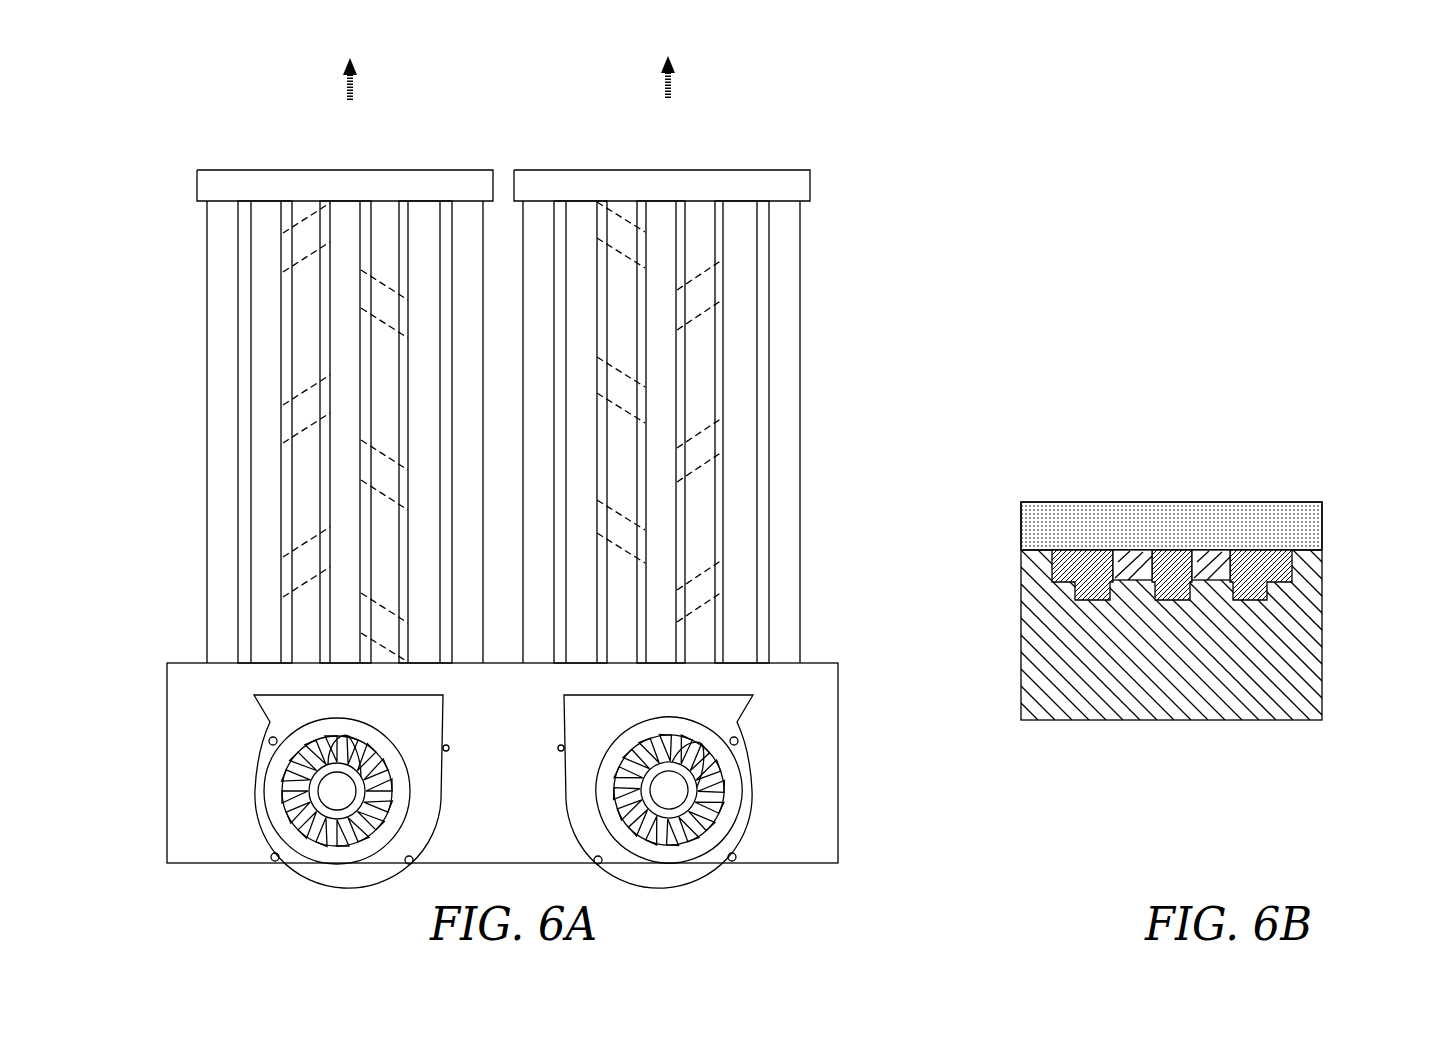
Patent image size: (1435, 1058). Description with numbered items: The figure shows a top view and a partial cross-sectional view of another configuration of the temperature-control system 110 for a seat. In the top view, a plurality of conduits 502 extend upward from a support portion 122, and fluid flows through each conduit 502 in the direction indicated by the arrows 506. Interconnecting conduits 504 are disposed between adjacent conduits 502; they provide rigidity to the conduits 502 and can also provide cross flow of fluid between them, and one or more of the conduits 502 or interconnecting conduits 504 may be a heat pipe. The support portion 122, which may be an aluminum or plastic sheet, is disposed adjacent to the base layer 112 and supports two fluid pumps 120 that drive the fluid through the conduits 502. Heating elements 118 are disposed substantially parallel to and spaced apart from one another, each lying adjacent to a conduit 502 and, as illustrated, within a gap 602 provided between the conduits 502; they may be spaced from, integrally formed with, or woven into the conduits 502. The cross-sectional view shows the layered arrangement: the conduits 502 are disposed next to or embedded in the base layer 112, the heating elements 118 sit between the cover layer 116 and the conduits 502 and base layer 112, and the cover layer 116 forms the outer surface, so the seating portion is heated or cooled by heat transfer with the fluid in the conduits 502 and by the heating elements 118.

In FIG. 6A, the system 110 is at (908, 180).
In FIG. 6B, the system 110 is at (1280, 378).
In FIG. 6B, the base layer 112 is at (1308, 652).
In FIG. 6B, the cover layer 116 is at (1085, 500).
In FIG. 6A, the heating element 118 is at (466, 213).
In FIG. 6B, the heating element 118 is at (1123, 567).
In FIG. 6A, the fluid pump 120 is at (267, 813).
In FIG. 6A, the support portion 122 is at (180, 768).
In FIG. 6A, the conduit 502 is at (263, 215).
In FIG. 6B, the conduit 502 is at (1278, 562).
In FIG. 6A, the interconnecting conduit 504 is at (303, 262).
In FIG. 6A, the arrows 506 is at (356, 80).
In FIG. 6A, the gap 602 is at (245, 240).